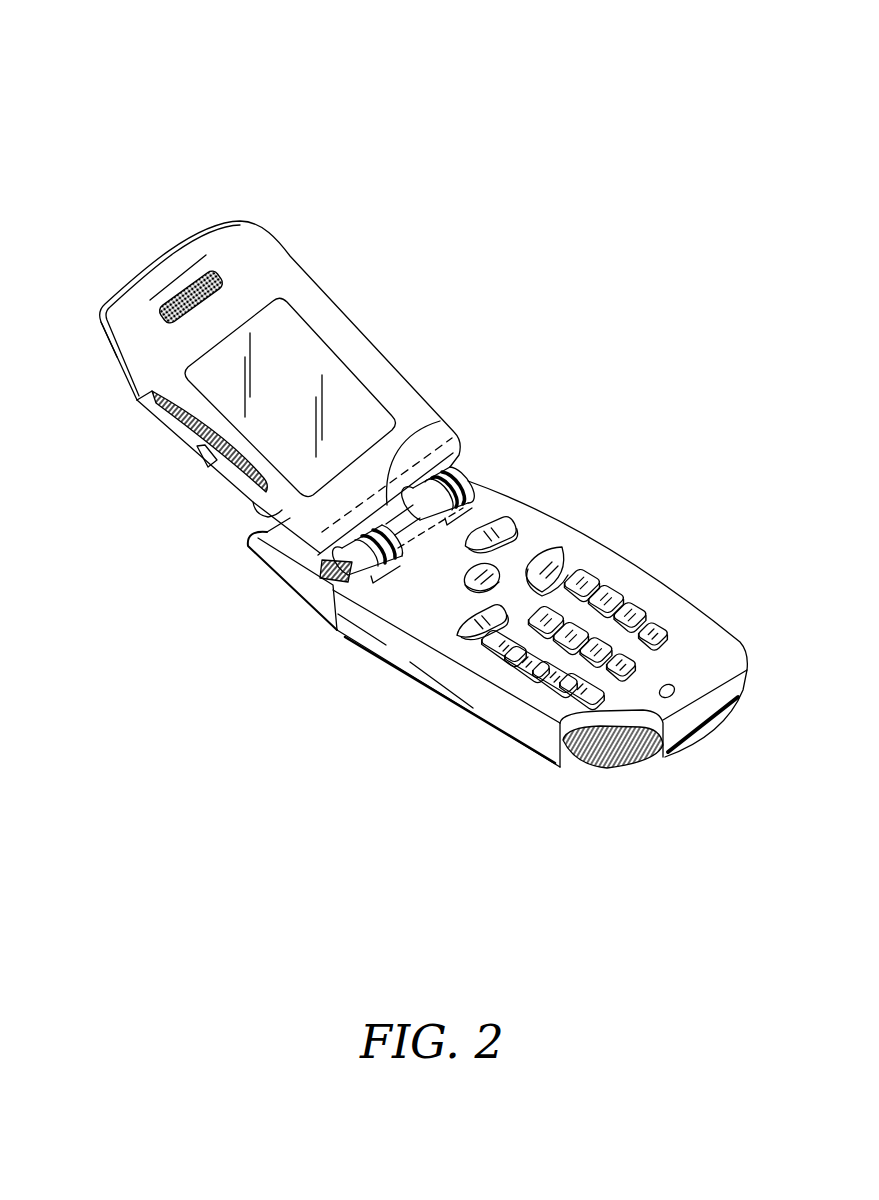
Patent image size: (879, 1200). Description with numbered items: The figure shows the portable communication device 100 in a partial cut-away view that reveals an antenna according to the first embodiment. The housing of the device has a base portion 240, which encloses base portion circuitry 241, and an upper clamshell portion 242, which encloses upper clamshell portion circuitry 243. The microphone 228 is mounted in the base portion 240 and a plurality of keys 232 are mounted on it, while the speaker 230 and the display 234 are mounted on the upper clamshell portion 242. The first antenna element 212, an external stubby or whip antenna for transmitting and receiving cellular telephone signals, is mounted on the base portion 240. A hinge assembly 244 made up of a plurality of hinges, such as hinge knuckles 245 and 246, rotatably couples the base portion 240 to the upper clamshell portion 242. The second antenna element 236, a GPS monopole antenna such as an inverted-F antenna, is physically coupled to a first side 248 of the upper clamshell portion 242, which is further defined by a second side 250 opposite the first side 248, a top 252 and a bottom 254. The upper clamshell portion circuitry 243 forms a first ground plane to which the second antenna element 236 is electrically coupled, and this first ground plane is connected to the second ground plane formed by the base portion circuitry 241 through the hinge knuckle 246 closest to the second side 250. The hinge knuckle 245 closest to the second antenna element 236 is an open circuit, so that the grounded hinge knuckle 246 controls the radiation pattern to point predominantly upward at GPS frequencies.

The portable communication device 100 is at (816, 41).
The first antenna element 212 is at (250, 549).
The microphone 228 is at (672, 688).
The speaker 230 is at (182, 290).
The keys 232 is at (620, 580).
The display 234 is at (308, 409).
The second antenna element 236 is at (203, 462).
The base portion 240 is at (570, 523).
The base portion circuitry 241 is at (610, 767).
The upper clamshell portion 242 is at (232, 220).
The upper clamshell portion circuitry 243 is at (240, 484).
The hinge assembly 244 is at (455, 450).
The hinge knuckle 245 is at (352, 562).
The hinge knuckle 246 is at (465, 470).
The first side 248 is at (98, 321).
The second side 250 is at (368, 341).
The top 252 is at (167, 251).
The bottom 254 is at (440, 421).